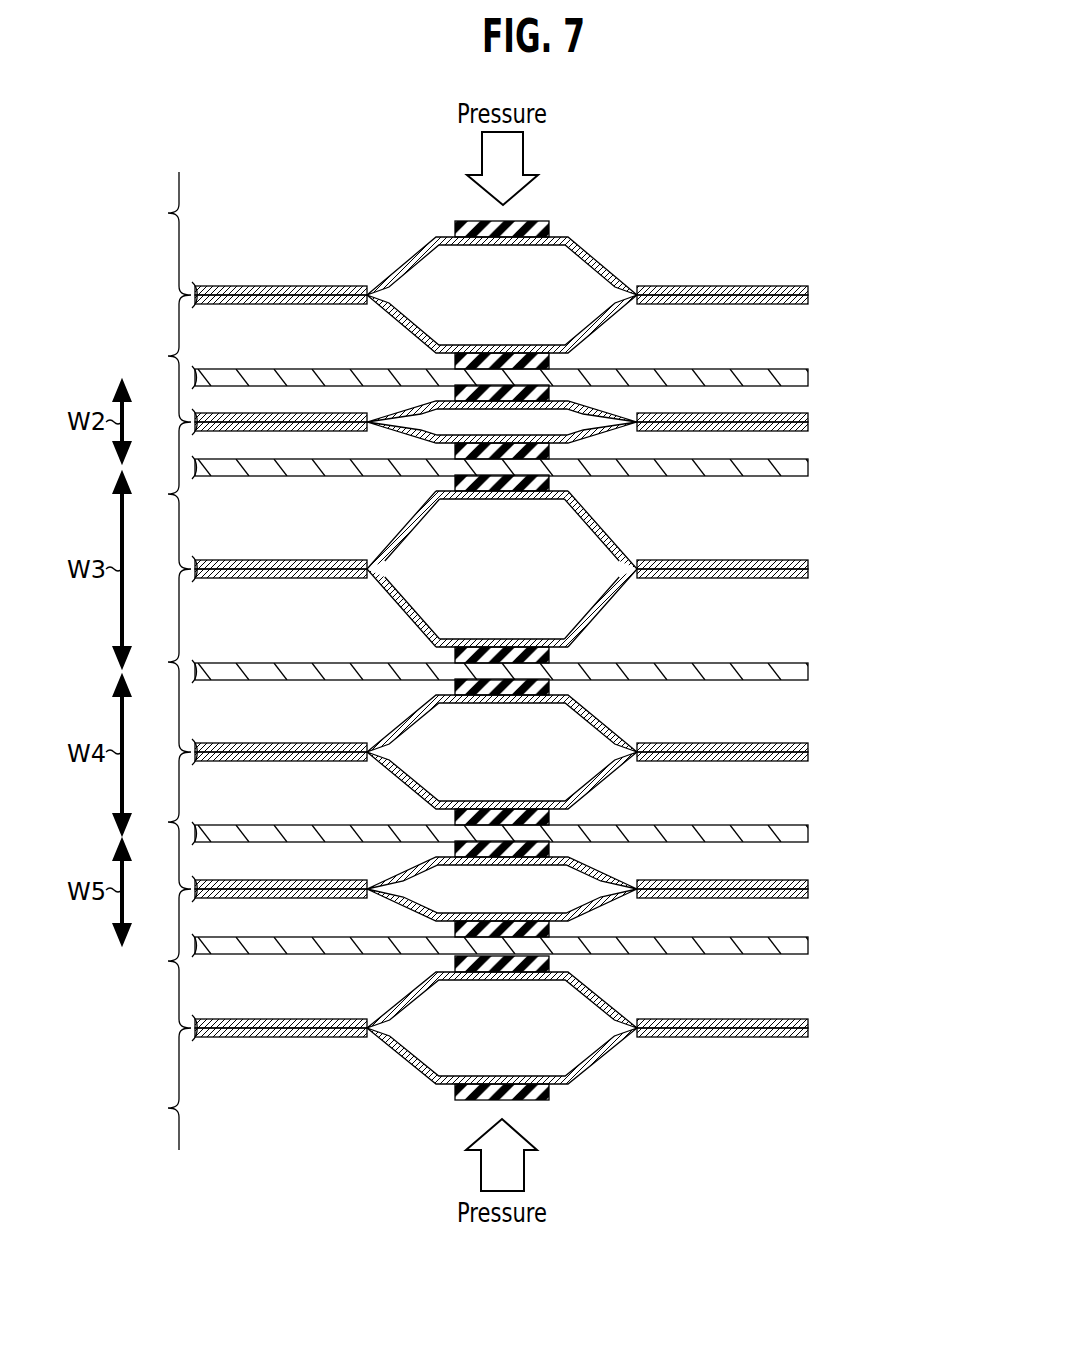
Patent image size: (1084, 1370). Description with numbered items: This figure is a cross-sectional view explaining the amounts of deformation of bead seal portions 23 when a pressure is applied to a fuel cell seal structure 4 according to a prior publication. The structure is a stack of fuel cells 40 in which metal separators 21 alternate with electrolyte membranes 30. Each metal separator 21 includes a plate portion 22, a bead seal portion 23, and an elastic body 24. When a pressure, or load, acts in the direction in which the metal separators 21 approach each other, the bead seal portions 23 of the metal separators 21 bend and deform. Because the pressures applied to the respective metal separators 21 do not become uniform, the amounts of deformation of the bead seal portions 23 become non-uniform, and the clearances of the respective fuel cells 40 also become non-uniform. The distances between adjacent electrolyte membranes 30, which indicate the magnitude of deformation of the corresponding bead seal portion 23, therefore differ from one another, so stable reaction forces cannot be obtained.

The fuel cell seal structure 4 is at (729, 152).
The metal separator 21 is at (882, 660).
The plate portion 22 is at (757, 558).
The bead seal portion 23 is at (607, 522).
The elastic body 24 is at (550, 482).
The electrolyte membrane 30 is at (546, 663).
The fuel cell 40 is at (160, 661).